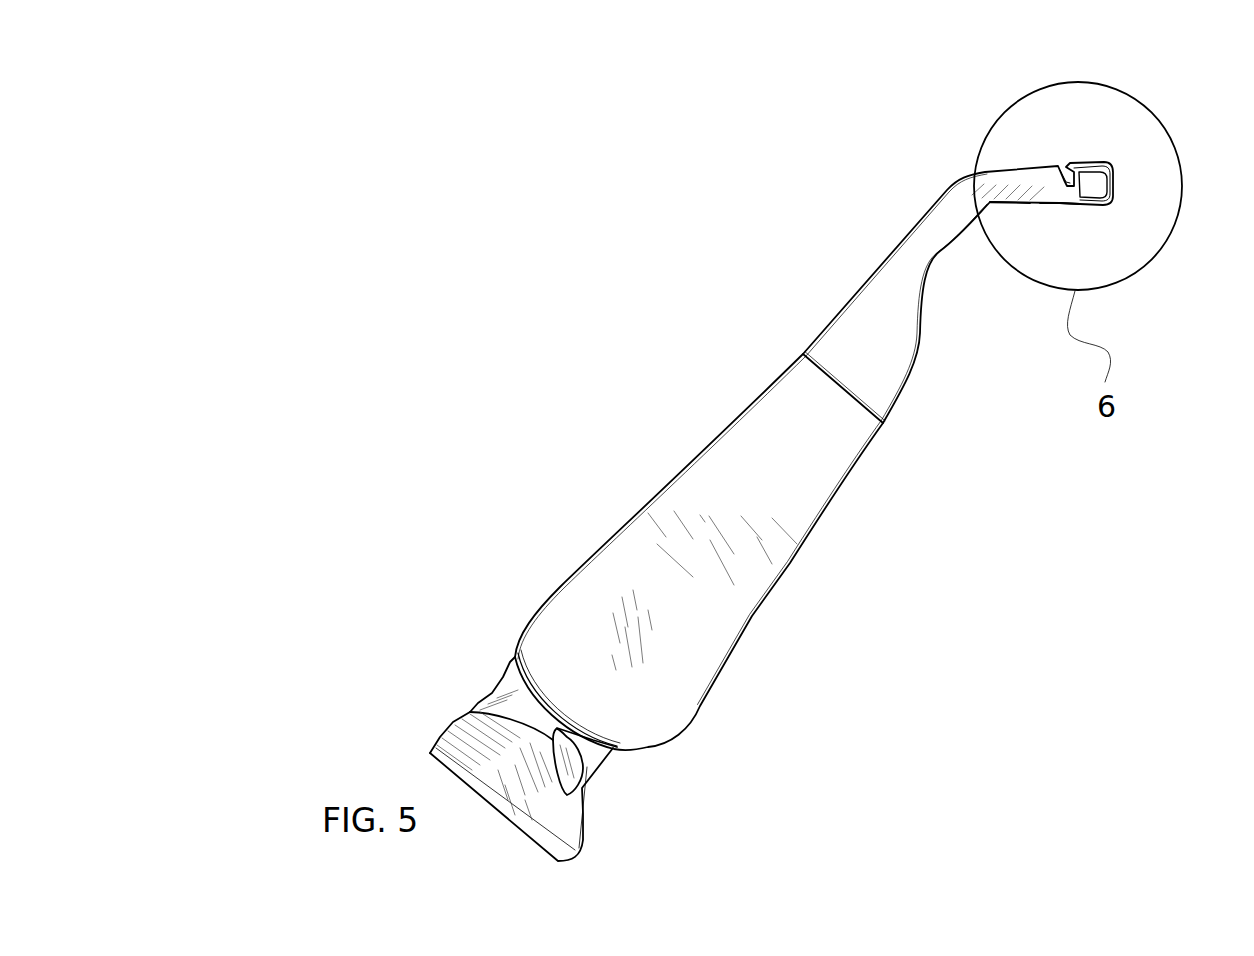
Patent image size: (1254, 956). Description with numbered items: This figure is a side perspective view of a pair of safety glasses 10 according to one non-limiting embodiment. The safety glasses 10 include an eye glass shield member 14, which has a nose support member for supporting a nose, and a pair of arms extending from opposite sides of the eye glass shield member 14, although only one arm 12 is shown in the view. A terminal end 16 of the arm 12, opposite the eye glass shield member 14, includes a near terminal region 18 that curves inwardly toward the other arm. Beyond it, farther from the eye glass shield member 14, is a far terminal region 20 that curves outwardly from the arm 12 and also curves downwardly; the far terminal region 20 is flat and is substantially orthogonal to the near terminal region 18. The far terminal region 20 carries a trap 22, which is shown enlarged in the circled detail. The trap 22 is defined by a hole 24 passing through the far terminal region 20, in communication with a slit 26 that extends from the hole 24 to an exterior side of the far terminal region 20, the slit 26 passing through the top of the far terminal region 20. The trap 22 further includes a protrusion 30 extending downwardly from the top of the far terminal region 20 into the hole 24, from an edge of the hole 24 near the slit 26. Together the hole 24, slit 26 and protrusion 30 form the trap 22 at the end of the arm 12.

The pair of safety glasses 10 is at (483, 186).
The arm 12 is at (843, 260).
The eye glass shield member 14 is at (510, 608).
The terminal end 16 is at (957, 132).
The near terminal region 18 is at (990, 203).
The far terminal region 20 is at (1065, 208).
The trap 22 is at (1173, 118).
The hole 24 is at (1096, 190).
The slit 26 is at (1055, 162).
The protrusion 30 is at (1096, 164).